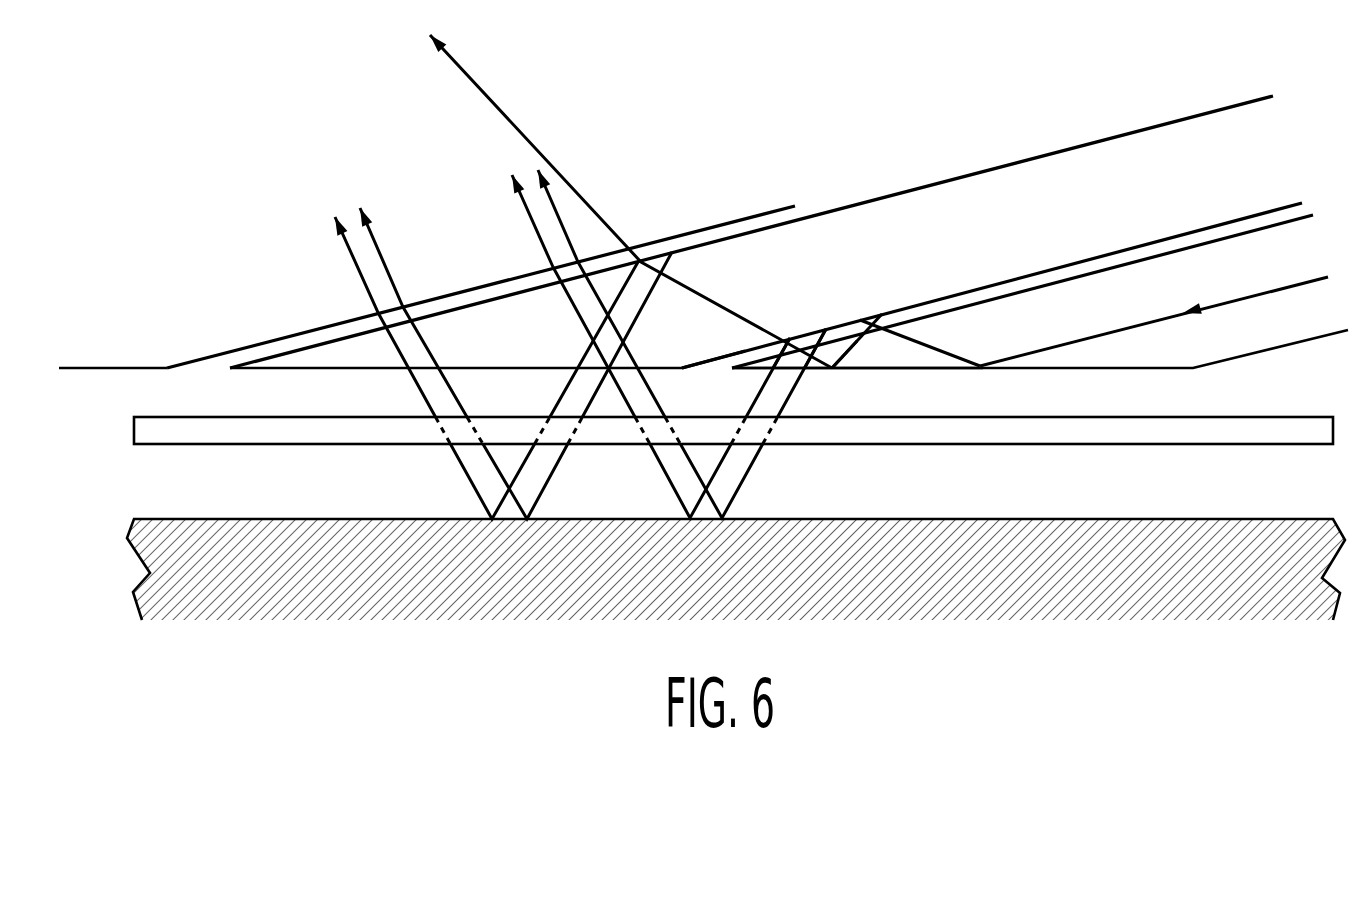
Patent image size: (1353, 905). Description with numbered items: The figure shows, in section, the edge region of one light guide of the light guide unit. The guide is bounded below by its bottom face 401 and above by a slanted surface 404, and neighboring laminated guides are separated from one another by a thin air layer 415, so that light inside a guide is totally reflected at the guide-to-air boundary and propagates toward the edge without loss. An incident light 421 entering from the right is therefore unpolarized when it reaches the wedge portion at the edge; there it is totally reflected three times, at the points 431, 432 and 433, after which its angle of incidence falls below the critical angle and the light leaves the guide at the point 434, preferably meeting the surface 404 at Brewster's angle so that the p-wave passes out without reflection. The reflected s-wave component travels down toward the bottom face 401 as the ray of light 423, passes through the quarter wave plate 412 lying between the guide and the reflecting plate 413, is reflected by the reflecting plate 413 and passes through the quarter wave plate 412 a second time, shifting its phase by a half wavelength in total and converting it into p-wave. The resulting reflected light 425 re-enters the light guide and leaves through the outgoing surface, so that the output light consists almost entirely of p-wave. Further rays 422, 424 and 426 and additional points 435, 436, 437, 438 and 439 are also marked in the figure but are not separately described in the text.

The bottom face 401 is at (1155, 368).
The surface 404 is at (990, 303).
The quarter wave plate 412 is at (1062, 446).
The reflecting plate 413 is at (975, 519).
The thin air layer 415 is at (1225, 228).
The incident light 421 is at (1233, 300).
The outcoupled light beam 422 is at (693, 289).
The ray of light 423 is at (783, 387).
The light rays reflected by reflector 424 is at (720, 467).
The reflected light 425 is at (627, 397).
The emitted light beams 426 is at (532, 228).
The point 431 is at (980, 368).
The point 432 is at (885, 311).
The point 433 is at (835, 330).
The point 434 is at (815, 335).
The prism facet 435 is at (782, 335).
The bottom surface portion 436 is at (838, 369).
The recess in bottom surface 437 is at (748, 346).
The reflection point 438 is at (727, 512).
The reflection point 439 is at (685, 510).